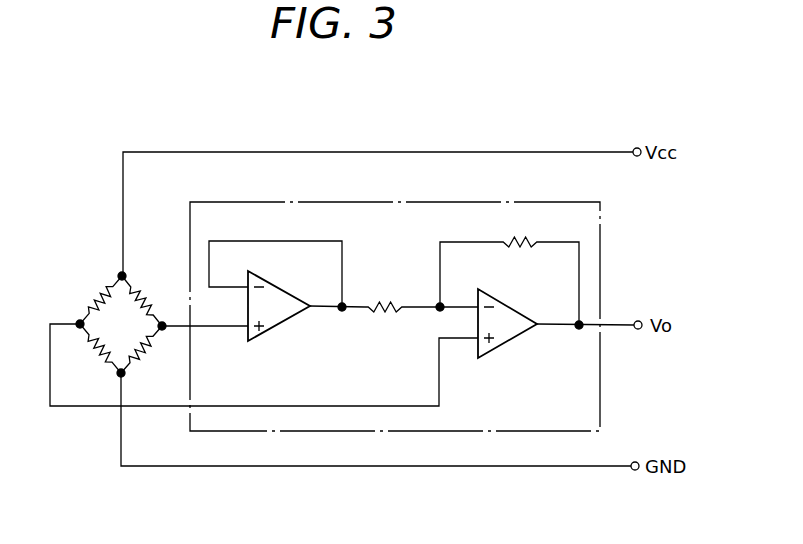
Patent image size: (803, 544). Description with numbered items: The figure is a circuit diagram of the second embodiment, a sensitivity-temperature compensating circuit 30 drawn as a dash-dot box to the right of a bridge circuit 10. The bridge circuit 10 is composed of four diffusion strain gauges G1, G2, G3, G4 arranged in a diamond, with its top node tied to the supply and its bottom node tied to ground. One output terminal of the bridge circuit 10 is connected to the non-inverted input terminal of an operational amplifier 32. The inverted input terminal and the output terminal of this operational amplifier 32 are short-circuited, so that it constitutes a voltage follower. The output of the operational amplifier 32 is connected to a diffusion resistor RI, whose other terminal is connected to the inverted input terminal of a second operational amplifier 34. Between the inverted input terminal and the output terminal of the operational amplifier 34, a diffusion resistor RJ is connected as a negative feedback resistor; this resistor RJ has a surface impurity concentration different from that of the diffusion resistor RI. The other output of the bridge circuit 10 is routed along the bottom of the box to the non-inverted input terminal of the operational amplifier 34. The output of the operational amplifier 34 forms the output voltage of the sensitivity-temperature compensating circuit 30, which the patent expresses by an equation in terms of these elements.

The bridge circuit 10 is at (100, 323).
The diffusion strain gauge G1 is at (95, 286).
The diffusion strain gauge G2 is at (93, 351).
The diffusion strain gauge G3 is at (146, 290).
The diffusion strain gauge G4 is at (142, 351).
The sensitivity-temperature compensating circuit 30 is at (601, 300).
The operational amplifier 32 is at (295, 315).
The operational amplifier 34 is at (508, 342).
The diffusion resistor RI is at (370, 304).
The diffusion resistor RJ is at (536, 238).